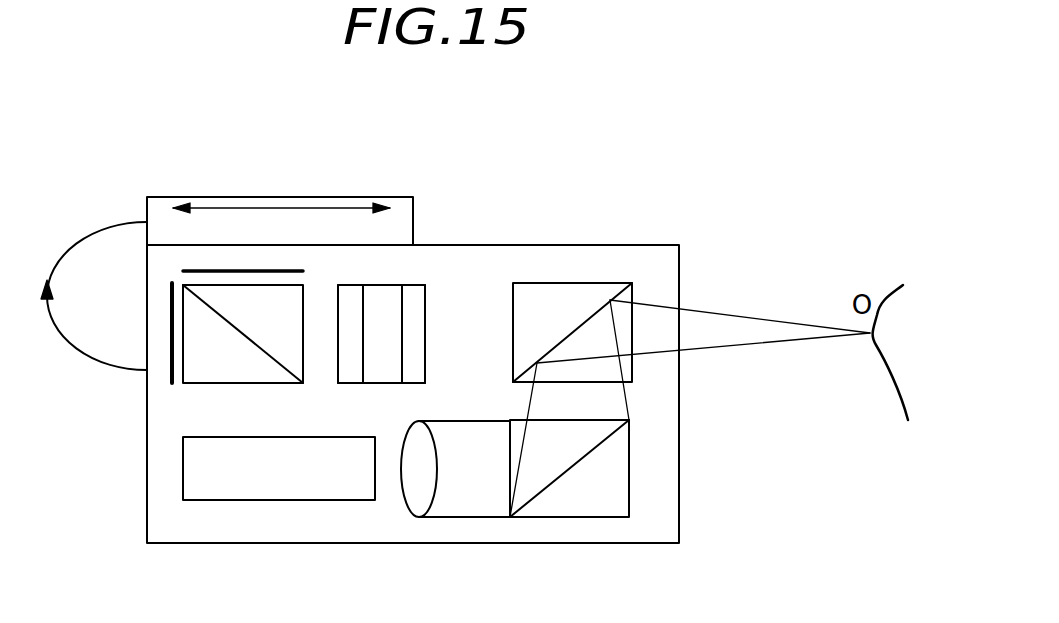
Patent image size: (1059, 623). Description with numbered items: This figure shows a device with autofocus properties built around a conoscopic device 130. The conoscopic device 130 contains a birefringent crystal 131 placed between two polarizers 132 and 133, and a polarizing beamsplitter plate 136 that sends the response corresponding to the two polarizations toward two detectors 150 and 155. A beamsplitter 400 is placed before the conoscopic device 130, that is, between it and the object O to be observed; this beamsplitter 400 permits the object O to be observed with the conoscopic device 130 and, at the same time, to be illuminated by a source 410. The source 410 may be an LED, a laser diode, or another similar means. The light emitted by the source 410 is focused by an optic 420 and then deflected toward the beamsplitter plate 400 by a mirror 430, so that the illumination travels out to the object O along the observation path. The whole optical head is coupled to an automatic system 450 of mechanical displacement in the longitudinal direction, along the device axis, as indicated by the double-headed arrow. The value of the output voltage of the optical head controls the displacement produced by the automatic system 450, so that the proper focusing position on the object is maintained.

The conoscopic device 130 is at (389, 369).
The birefringent crystal 131 is at (385, 297).
The polarizer 132 is at (417, 297).
The polarizer 133 is at (353, 297).
The polarizing beamsplitter plate 136 is at (222, 300).
The detector 150 is at (170, 374).
The detector 155 is at (260, 267).
The beamsplitter 400 is at (575, 293).
The source 410 is at (237, 488).
The optic 420 is at (467, 505).
The mirror 430 is at (553, 487).
The automatic system of mechanical displacement 450 is at (158, 208).